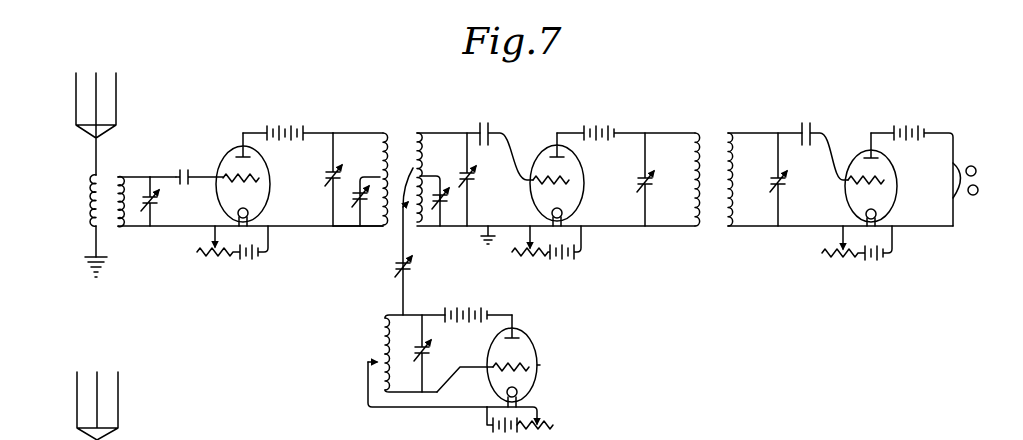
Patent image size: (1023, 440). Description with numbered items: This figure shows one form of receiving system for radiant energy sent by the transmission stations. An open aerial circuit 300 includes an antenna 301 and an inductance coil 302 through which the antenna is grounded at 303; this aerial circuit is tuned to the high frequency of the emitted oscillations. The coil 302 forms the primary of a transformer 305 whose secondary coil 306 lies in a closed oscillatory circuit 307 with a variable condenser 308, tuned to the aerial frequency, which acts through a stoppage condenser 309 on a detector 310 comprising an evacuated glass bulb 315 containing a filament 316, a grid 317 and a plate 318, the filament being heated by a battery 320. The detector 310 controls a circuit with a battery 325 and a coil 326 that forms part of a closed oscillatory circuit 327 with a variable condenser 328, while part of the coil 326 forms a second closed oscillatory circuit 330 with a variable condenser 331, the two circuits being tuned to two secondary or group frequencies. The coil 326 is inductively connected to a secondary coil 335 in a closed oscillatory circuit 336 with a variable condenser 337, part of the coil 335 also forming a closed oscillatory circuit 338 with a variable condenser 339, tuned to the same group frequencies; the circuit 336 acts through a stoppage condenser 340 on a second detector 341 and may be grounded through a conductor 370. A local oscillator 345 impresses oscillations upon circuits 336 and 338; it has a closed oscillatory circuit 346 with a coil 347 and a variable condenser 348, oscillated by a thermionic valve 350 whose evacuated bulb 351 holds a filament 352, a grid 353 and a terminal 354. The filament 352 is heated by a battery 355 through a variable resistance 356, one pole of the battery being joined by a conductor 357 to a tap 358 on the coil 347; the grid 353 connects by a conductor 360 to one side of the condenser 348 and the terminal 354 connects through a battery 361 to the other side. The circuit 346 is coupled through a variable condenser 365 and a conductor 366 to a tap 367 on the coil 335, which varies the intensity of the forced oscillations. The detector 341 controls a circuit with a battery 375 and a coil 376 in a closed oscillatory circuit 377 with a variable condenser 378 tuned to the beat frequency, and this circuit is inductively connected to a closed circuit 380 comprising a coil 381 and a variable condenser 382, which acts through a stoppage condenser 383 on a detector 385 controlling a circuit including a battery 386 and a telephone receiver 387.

The open aerial circuit 300 is at (76, 197).
The antenna 301 is at (95, 160).
The inductance coil 302 is at (93, 212).
The ground 303 is at (90, 256).
The transformer 305 is at (104, 167).
The secondary coil 306 is at (122, 215).
The closed oscillatory circuit 307 is at (140, 182).
The variable condenser 308 is at (158, 204).
The stoppage condenser 309 is at (195, 165).
The detector 310 is at (250, 211).
The evacuated glass bulb 315 is at (268, 172).
The filament 316 is at (250, 218).
The grid 317 is at (243, 184).
The plate 318 is at (240, 152).
The battery 320 is at (232, 252).
The battery 325 is at (288, 122).
The coil 326 is at (380, 133).
The closed oscillatory circuit 327 is at (353, 153).
The variable condenser 328 is at (330, 188).
The closed oscillatory circuit 330 is at (376, 228).
The variable condenser 331 is at (364, 208).
The secondary coil 335 is at (413, 140).
The closed oscillatory circuit 336 is at (457, 143).
The variable condenser 337 is at (473, 182).
The closed oscillatory circuit 338 is at (490, 242).
The variable condenser 339 is at (448, 203).
The stoppage condenser 340 is at (485, 128).
The detector 341 is at (575, 179).
The local oscillator 345 is at (469, 417).
The closed oscillatory circuit 346 is at (411, 373).
The coil 347 is at (378, 343).
The variable condenser 348 is at (410, 353).
The thermionic valve 350 is at (536, 347).
The evacuated glass bulb 351 is at (539, 370).
The filament 352 is at (518, 392).
The grid 353 is at (530, 367).
The terminal 354 is at (520, 337).
The battery 355 is at (486, 425).
The variable resistance 356 is at (542, 424).
The conductor 357 is at (462, 406).
The tap 358 is at (366, 361).
The conductor 360 is at (471, 366).
The battery 361 is at (468, 309).
The variable condenser 365 is at (412, 262).
The conductor 366 is at (405, 242).
The tap 367 is at (424, 170).
The conductor 370 is at (522, 254).
The battery 375 is at (596, 127).
The coil 376 is at (690, 142).
The closed oscillatory circuit 377 is at (652, 188).
The variable condenser 378 is at (647, 195).
The closed circuit 380 is at (840, 179).
The coil 381 is at (736, 142).
The variable condenser 382 is at (786, 187).
The stoppage condenser 383 is at (807, 128).
The detector 385 is at (897, 186).
The battery 386 is at (910, 127).
The telephone receiver 387 is at (975, 168).